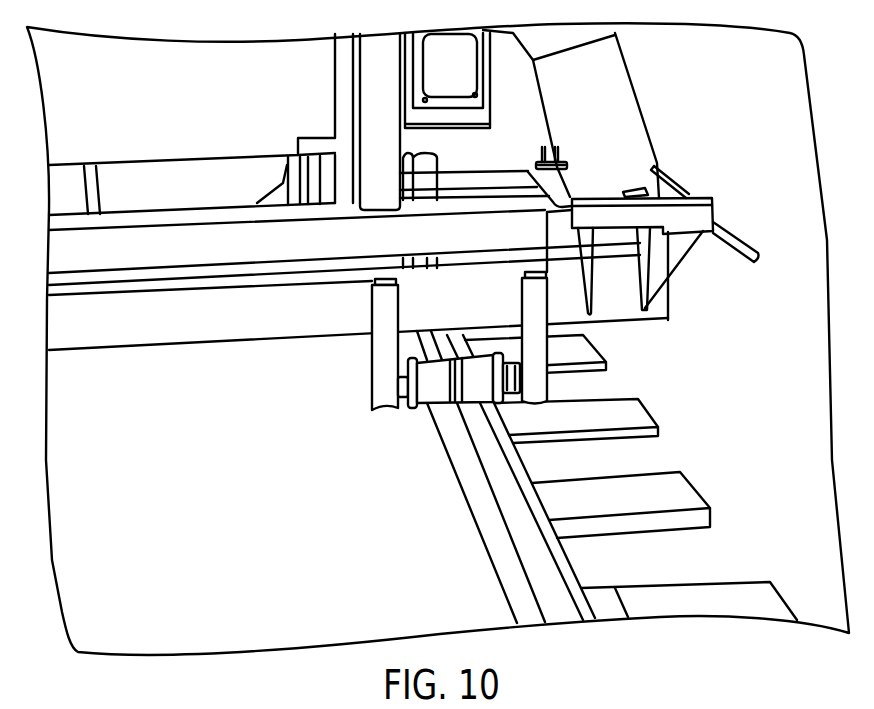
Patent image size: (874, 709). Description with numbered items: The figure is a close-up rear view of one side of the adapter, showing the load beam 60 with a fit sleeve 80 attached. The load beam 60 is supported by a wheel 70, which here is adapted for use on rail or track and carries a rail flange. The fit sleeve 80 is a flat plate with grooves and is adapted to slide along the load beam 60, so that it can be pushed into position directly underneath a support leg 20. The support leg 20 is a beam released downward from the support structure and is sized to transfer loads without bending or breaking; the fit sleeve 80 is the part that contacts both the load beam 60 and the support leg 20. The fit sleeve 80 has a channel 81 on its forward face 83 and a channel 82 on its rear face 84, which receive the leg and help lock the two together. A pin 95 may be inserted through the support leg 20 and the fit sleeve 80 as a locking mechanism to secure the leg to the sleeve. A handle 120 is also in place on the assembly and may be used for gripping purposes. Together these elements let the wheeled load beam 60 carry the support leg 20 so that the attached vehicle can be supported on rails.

The support leg 20 is at (622, 118).
The load beam 60 is at (660, 308).
The wheel 70 is at (480, 385).
The fit sleeve 80 is at (703, 210).
The channel 81 is at (663, 215).
The channel 82 is at (547, 152).
The forward face 83 is at (590, 270).
The rear face 84 is at (535, 167).
The pin 95 is at (656, 167).
The handle 120 is at (760, 259).